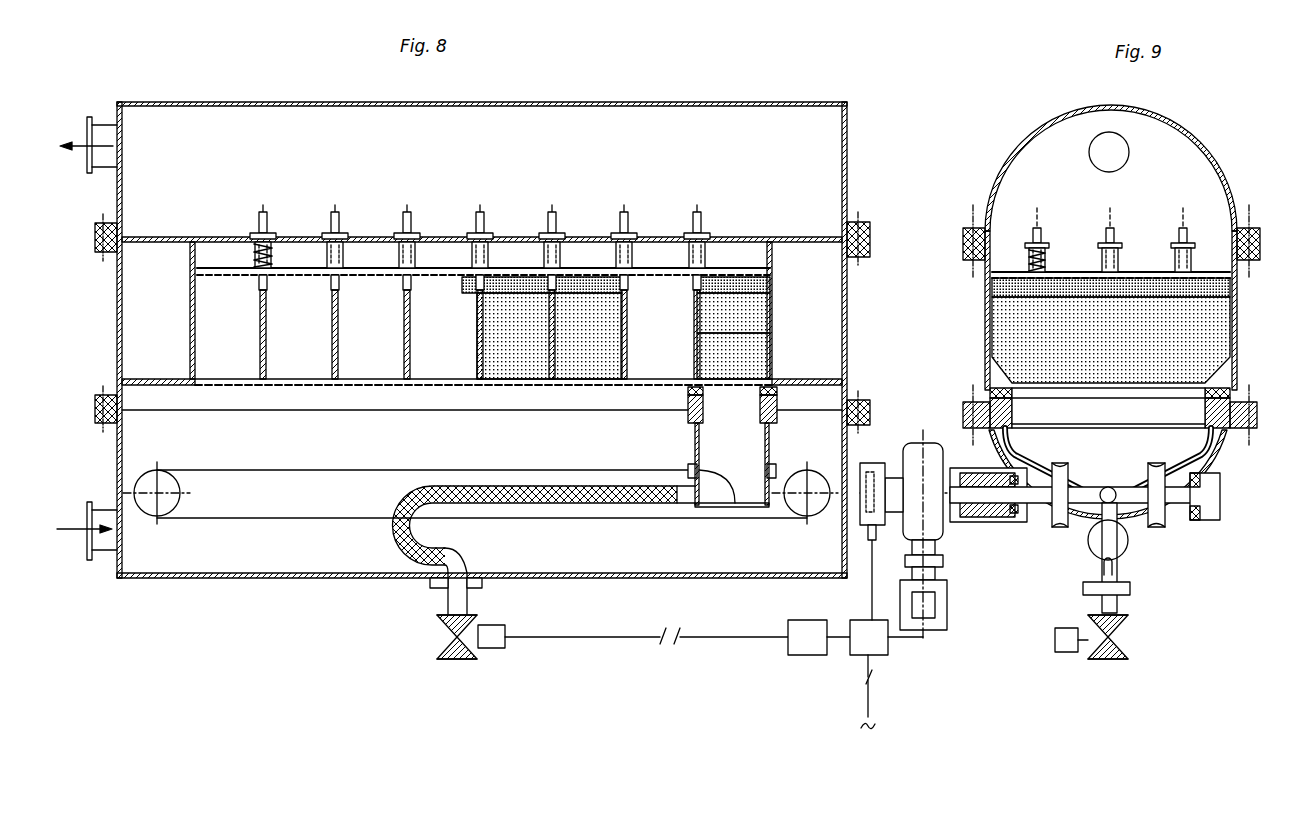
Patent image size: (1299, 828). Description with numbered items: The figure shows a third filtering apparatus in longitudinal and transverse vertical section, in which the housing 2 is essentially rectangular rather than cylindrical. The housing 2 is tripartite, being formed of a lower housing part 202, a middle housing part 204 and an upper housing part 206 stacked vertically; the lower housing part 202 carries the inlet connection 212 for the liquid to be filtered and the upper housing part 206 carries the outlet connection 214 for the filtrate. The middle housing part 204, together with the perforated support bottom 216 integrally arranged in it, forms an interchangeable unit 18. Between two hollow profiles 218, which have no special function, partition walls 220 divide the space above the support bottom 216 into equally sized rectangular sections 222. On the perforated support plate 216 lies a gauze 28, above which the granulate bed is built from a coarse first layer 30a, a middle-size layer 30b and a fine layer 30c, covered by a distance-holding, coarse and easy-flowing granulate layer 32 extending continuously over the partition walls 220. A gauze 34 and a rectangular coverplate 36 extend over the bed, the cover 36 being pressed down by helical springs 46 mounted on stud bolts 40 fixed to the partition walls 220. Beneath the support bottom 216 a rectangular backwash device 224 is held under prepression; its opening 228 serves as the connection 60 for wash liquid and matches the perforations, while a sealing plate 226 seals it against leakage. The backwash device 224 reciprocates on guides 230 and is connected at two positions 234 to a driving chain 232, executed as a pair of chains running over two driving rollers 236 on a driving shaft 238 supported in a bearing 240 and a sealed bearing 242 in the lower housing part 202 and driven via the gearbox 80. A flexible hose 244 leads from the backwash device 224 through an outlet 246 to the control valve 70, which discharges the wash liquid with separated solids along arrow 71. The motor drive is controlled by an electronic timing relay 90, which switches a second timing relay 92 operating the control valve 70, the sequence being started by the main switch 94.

In FIG. 8, the housing 2 is at (868, 333).
In FIG. 8, the interchangeable unit 18 is at (448, 203).
In FIG. 8, the gauze 28 is at (388, 386).
In FIG. 8, the first layer 30a is at (773, 366).
In FIG. 8, the next layer 30b is at (773, 338).
In FIG. 8, the fine size granulate layer 30c is at (773, 310).
In FIG. 8, the granulate layer 32 is at (773, 284).
In FIG. 8, the gauze 34 is at (648, 273).
In FIG. 8, the coverplate 36 is at (577, 268).
In FIG. 8, the stud bolts 40 is at (262, 284).
In FIG. 8, the helical springs 46 is at (270, 255).
In FIG. 8, the connection for wash liquid 60 is at (733, 438).
In FIG. 8, the control valve 70 is at (455, 637).
In FIG. 9, the control valve 70 is at (1112, 658).
In FIG. 8, the arrow 71 is at (457, 683).
In FIG. 9, the arrow 71 is at (1108, 683).
In FIG. 9, the gear box 80 is at (913, 450).
In FIG. 8, the electronic timing relay 90 is at (862, 624).
In FIG. 8, the second electronic timing relay 92 is at (802, 624).
In FIG. 8, the main switch 94 is at (855, 692).
In FIG. 8, the lower housing part 202 is at (117, 450).
In FIG. 8, the middle housing part 204 is at (117, 352).
In FIG. 8, the upper housing part 206 is at (117, 192).
In FIG. 8, the inlet connection 212 is at (97, 548).
In FIG. 8, the outlet connection 214 is at (100, 127).
In FIG. 8, the support bottom 216 is at (296, 386).
In FIG. 8, the hollow profiles 218 is at (144, 313).
In FIG. 8, the partition walls 220 is at (268, 338).
In FIG. 8, the sections 222 is at (374, 324).
In FIG. 8, the backwash device 224 is at (692, 423).
In FIG. 8, the sealing plate 226 is at (688, 393).
In FIG. 8, the opening 228 is at (748, 410).
In FIG. 9, the opening 228 is at (1090, 430).
In FIG. 9, the guides 230 is at (980, 418).
In FIG. 8, the driving chain 232 is at (440, 470).
In FIG. 8, the positions 234 is at (735, 505).
In FIG. 9, the driving rollers 236 is at (1160, 512).
In FIG. 9, the driving shaft 238 is at (975, 495).
In FIG. 9, the bearing 240 is at (1215, 522).
In FIG. 9, the sealed bearing 242 is at (1003, 560).
In FIG. 8, the flexible hose 244 is at (578, 502).
In FIG. 8, the outlet 246 is at (470, 587).